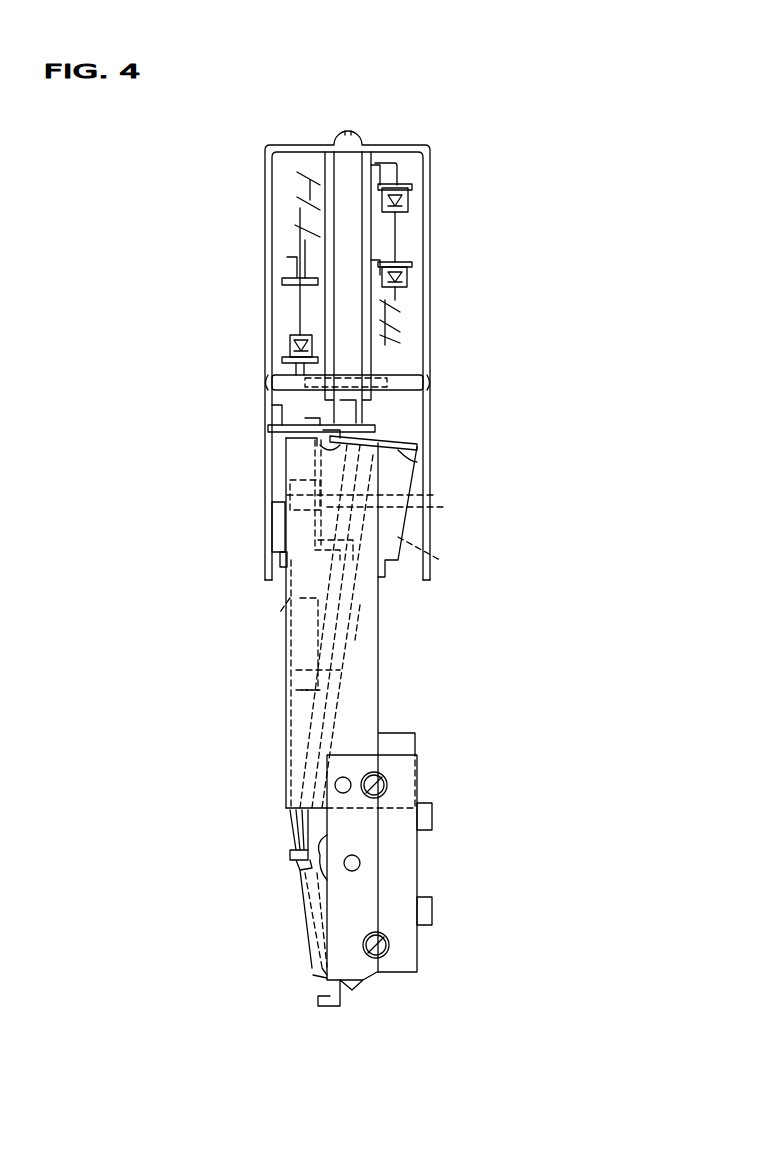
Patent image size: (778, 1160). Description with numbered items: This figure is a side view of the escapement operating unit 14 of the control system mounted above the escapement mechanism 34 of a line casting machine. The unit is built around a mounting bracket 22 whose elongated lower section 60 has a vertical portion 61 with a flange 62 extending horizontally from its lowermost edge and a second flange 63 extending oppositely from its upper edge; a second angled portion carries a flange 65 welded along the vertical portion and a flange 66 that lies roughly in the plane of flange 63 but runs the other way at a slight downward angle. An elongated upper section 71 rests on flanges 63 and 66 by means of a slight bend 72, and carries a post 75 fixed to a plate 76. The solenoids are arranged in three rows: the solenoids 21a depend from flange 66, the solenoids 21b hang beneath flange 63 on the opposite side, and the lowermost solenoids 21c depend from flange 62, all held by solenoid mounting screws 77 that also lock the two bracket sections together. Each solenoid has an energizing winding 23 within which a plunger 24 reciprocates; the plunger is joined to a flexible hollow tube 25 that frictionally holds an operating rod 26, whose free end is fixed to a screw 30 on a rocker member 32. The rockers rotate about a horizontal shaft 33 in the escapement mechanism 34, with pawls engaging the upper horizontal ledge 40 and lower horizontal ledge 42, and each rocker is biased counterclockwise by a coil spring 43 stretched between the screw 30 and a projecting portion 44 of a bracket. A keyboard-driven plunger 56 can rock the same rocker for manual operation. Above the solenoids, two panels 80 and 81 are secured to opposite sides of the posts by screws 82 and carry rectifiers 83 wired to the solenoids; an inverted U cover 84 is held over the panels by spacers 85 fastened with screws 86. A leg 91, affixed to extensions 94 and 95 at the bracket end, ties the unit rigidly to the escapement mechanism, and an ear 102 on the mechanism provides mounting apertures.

The operating unit 14 is at (356, 1014).
The solenoids 21a is at (408, 518).
The solenoids 21b is at (270, 517).
The solenoids 21c is at (345, 626).
The mounting bracket 22 is at (270, 428).
The energizing winding 23 is at (272, 540).
The plunger 24 is at (282, 570).
The hollow tube 25 is at (290, 598).
The operating rod 26 is at (295, 833).
The screw 30 is at (290, 856).
The rocker member 32 is at (320, 847).
The horizontal shaft 33 is at (360, 863).
The escapement mechanism 34 is at (421, 960).
The upper horizontal ledge 40 is at (432, 803).
The lower horizontal ledge 42 is at (430, 897).
The coil spring 43 is at (305, 905).
The projecting portion 44 is at (313, 975).
The plunger 56 is at (318, 1003).
The lower section 60 is at (418, 449).
The portion 61 is at (320, 445).
The flange 62 is at (300, 612).
The second flange 63 is at (295, 440).
The flange 65 is at (443, 508).
The flange 66 is at (403, 452).
The upper section 71 is at (270, 410).
The bend 72 is at (380, 428).
The post 75 is at (360, 165).
The plate 76 is at (355, 422).
The solenoid mounting screw 77 is at (280, 418).
The panel 80 is at (372, 165).
The panel 81 is at (330, 160).
The screw 82 is at (400, 178).
The rectifier 83 is at (408, 282).
The cover 84 is at (268, 147).
The spacer 85 is at (285, 378).
The screw 86 is at (268, 380).
The leg 91 is at (378, 664).
The extension 94 is at (285, 502).
The extension 95 is at (433, 494).
The ear 102 is at (375, 975).